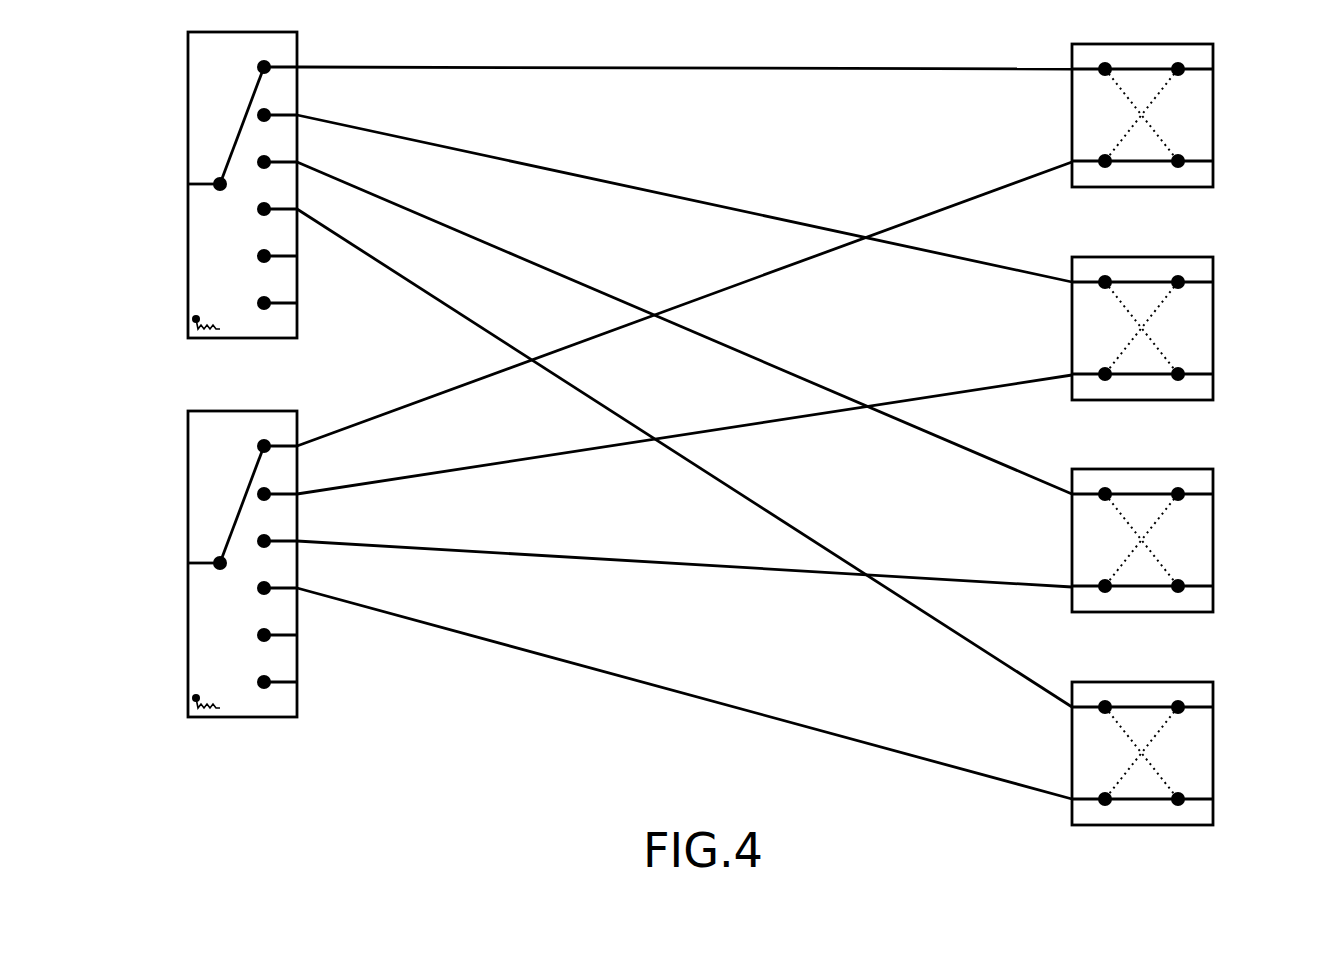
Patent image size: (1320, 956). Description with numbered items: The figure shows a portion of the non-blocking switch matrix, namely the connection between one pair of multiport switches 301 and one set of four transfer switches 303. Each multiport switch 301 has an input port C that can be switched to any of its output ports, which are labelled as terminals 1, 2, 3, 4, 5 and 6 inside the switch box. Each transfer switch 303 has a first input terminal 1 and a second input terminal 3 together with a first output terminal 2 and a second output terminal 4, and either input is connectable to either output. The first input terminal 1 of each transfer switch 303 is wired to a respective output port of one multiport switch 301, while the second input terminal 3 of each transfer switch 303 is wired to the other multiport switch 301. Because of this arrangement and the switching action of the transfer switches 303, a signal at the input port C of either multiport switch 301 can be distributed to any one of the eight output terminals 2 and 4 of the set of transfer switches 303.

The multiport switch 301 is at (188, 108).
The transfer switch 303 is at (1213, 97).
The first input terminal 1 is at (277, 246).
The first output terminal 2 is at (277, 294).
The second input terminal 3 is at (277, 341).
The second output terminal 4 is at (277, 388).
The switch terminal 5 is at (277, 435).
The switch terminal 6 is at (277, 482).